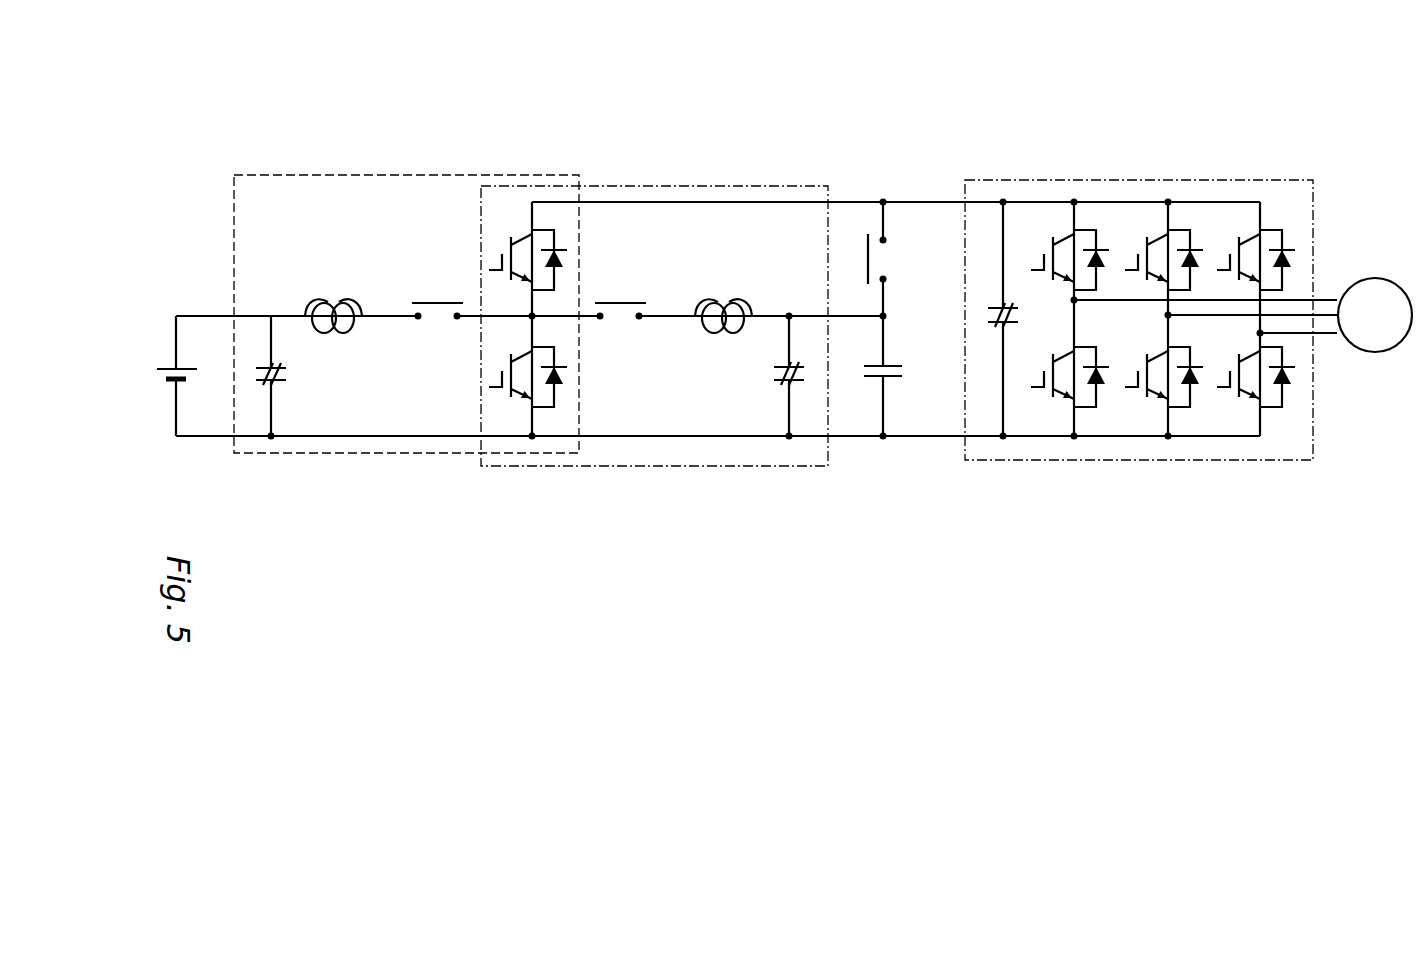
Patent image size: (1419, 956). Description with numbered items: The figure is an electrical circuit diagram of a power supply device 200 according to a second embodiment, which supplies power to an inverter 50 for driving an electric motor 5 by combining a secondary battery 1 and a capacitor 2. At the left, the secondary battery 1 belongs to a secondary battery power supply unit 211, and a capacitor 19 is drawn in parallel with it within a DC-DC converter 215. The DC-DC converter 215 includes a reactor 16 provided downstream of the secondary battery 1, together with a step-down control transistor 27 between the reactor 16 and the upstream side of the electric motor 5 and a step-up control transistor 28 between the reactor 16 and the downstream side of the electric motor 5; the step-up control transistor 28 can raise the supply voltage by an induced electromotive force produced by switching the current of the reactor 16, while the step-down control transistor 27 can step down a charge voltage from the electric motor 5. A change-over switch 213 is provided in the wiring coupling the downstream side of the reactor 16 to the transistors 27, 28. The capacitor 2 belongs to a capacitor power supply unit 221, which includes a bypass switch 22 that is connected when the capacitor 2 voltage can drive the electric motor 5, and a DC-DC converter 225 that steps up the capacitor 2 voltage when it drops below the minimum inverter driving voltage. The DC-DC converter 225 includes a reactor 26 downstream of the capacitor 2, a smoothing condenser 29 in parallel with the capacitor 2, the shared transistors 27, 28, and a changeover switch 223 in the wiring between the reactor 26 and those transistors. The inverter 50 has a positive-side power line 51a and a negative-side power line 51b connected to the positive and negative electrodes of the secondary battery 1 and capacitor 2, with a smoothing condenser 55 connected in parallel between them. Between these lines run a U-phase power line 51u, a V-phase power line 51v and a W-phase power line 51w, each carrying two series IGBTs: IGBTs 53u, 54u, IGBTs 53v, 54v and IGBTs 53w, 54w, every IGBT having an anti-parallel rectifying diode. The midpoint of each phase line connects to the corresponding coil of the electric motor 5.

The secondary battery 1 is at (172, 380).
The capacitor 2 is at (893, 380).
The electric motor 5 is at (1372, 278).
The reactor 16 is at (333, 298).
The capacitor 19 is at (286, 382).
The bypass switch 22 is at (866, 270).
The reactor 26 is at (719, 298).
The step-down control transistor 27 is at (526, 241).
The step-up control transistor 28 is at (518, 393).
The smoothing condenser 29 is at (779, 384).
The inverter 50 is at (1290, 178).
The positive-side power line 51a is at (1033, 200).
The negative-side power line 51b is at (1038, 440).
The U-phase power line 51u is at (1083, 224).
The V-phase power line 51v is at (1170, 224).
The W-phase power line 51w is at (1260, 222).
The IGBT 53u is at (1062, 278).
The IGBT 53v is at (1155, 278).
The IGBT 53w is at (1247, 282).
The IGBT 54u is at (1062, 392).
The IGBT 54v is at (1155, 392).
The IGBT 54w is at (1248, 392).
The smoothing condenser 55 is at (996, 326).
The power supply device 200 is at (942, 96).
The secondary battery power supply unit 211 is at (566, 158).
The change-over switch 213 is at (437, 302).
The DC-DC converter 215 is at (413, 455).
The capacitor power supply unit 221 is at (865, 176).
The changeover switch 223 is at (620, 302).
The DC-DC converter 225 is at (793, 468).